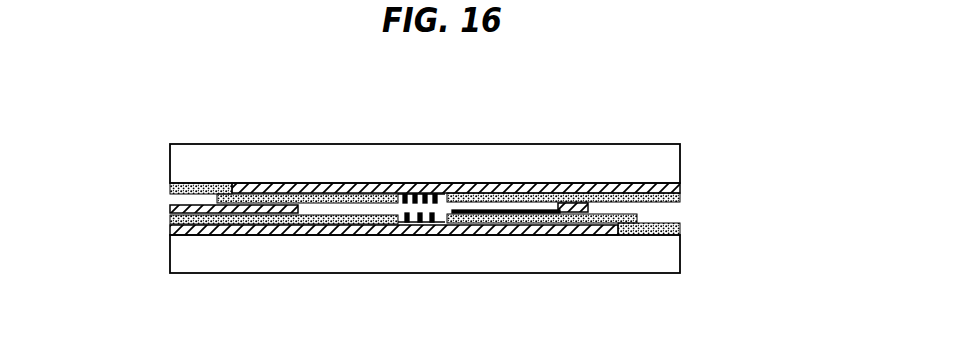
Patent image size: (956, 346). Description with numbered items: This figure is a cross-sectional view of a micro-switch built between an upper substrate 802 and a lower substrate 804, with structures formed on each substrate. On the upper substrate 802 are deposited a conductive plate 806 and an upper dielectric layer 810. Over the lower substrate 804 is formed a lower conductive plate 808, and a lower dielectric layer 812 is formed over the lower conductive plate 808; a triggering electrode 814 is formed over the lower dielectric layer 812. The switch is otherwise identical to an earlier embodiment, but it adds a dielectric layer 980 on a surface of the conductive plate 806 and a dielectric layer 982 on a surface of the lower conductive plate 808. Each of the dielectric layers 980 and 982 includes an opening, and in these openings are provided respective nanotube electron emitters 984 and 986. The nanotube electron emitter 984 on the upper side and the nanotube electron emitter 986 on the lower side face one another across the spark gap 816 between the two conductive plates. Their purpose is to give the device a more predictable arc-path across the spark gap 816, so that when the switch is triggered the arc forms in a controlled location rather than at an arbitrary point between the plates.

The upper substrate 802 is at (680, 163).
The conductive plate 806 is at (680, 185).
The upper dielectric layer 810 is at (680, 197).
The lower dielectric layer 812 is at (680, 225).
The lower substrate 804 is at (680, 253).
The dielectric layer 980 is at (170, 188).
The dielectric layer 982 is at (170, 213).
The lower conductive plate 808 is at (170, 230).
The nanotube electron emitter 984 is at (380, 190).
The spark gap 816 is at (448, 188).
The triggering electrode 814 is at (580, 198).
The nanotube electron emitter 986 is at (450, 220).